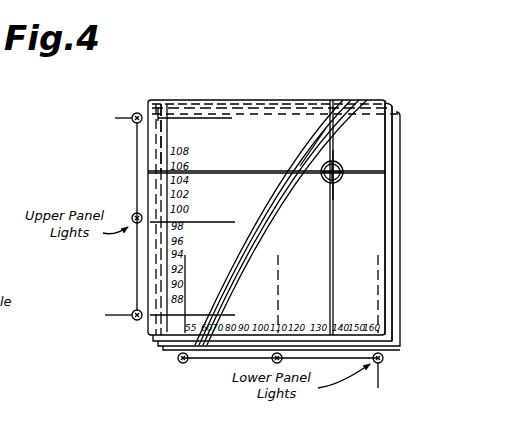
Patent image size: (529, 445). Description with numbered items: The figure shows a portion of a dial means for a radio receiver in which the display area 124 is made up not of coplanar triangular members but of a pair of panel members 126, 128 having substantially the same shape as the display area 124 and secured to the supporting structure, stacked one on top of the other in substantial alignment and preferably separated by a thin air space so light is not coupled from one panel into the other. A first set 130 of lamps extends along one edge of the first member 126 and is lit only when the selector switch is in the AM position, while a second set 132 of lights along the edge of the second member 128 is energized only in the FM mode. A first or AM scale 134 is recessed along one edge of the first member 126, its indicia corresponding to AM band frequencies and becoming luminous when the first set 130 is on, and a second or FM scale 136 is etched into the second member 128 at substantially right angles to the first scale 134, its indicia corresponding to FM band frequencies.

The display area 124 is at (357, 190).
The first panel member 126 is at (388, 228).
The second panel member 128 is at (400, 149).
The first set of lamps 130 is at (137, 112).
The second set of lights 132 is at (393, 360).
The first or AM scale 134 is at (382, 328).
The second or FM scale 136 is at (180, 140).